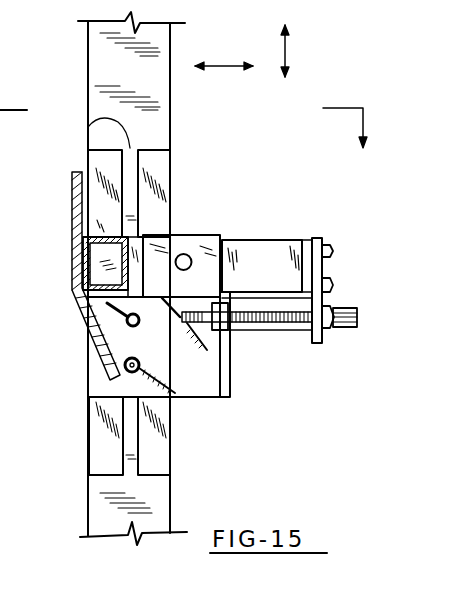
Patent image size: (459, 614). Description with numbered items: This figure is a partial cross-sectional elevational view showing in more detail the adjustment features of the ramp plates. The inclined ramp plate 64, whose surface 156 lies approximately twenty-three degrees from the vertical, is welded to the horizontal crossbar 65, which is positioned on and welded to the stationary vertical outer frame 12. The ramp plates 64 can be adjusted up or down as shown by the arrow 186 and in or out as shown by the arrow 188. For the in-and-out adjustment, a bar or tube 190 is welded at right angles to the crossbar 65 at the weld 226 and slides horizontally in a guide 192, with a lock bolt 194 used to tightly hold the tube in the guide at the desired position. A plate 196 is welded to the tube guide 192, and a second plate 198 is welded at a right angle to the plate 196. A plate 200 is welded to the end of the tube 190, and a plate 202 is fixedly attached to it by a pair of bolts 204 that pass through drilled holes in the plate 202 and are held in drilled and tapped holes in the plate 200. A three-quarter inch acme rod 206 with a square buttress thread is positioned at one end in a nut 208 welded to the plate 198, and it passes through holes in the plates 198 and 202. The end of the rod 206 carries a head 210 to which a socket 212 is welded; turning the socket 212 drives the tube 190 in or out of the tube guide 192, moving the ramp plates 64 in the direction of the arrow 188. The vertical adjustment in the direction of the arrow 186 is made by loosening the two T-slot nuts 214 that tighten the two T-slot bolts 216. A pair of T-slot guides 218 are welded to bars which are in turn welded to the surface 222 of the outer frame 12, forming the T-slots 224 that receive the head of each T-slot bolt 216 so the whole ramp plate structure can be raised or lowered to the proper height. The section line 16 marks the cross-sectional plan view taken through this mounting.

The stationary outer frame 12 is at (88, 78).
The section line 16— 16 is at (350, 142).
The ramp plate 64 is at (72, 192).
The horizontal crossbar 65 is at (95, 265).
The surface of the ramp plate 156 is at (88, 328).
The arrow 186 is at (290, 50).
The arrow 188 is at (233, 42).
The bar 190 is at (282, 279).
The guide 192 is at (207, 278).
The lock bolt 194 is at (190, 236).
The plate 196 is at (180, 353).
The second plate 198 is at (233, 392).
The plate 200 is at (323, 240).
The plate 202 is at (332, 248).
The bolt 204 is at (333, 283).
The acme rod 206 is at (233, 327).
The nut 208 is at (207, 350).
The head 210 is at (333, 330).
The socket 212 is at (357, 327).
The T-slot nut 214 is at (108, 307).
The T-slot bolt 216 is at (122, 350).
The T-slot guide 218 is at (100, 155).
The surface of the stationary vertical outer frame 222 is at (120, 60).
The T-slot 224 is at (88, 126).
The weld 226 is at (128, 268).